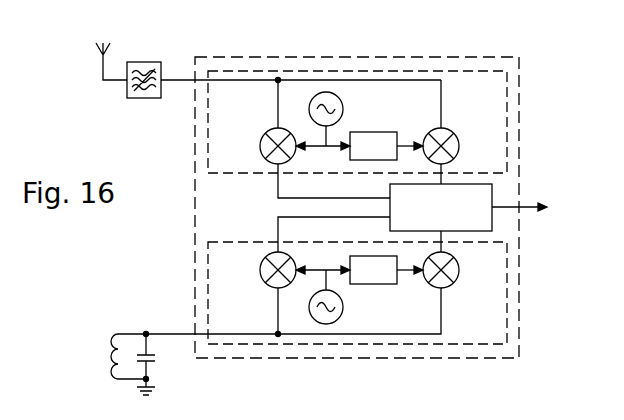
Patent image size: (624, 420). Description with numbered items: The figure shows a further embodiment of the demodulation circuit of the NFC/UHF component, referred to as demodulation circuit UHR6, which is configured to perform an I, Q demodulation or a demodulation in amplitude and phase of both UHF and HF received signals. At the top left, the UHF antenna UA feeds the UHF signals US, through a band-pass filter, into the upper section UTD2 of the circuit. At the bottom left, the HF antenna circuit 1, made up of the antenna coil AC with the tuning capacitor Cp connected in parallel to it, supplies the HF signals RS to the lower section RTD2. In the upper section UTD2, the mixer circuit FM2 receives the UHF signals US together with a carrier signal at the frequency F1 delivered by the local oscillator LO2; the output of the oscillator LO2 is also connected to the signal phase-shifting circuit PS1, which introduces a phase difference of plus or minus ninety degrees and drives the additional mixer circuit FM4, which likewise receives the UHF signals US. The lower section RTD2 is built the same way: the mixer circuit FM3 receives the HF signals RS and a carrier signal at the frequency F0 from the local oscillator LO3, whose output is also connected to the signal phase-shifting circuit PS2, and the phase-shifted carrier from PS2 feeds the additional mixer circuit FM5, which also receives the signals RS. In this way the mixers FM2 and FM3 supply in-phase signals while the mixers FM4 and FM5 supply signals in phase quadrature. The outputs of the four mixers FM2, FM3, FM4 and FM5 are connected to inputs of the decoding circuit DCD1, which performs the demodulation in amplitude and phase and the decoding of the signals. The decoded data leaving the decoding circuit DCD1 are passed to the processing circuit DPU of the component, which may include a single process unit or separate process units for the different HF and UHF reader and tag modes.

The HF antenna circuit 1 is at (128, 331).
The UHF antenna UA is at (108, 50).
The UHF signals US is at (301, 74).
The UHF demodulation section UTD2 is at (480, 70).
The HF demodulation section RTD2 is at (488, 345).
The demodulation circuit UHR6 is at (258, 218).
The mixer circuit FM2 is at (303, 139).
The mixer circuit FM3 is at (303, 277).
The additional mixer circuit FM4 is at (464, 132).
The additional mixer circuit FM5 is at (326, 282).
The local oscillator LO2 is at (342, 121).
The local oscillator LO3 is at (342, 295).
The signal phase-shifting circuit PS1 is at (391, 156).
The signal phase-shifting circuit PS2 is at (391, 280).
The decoding circuit DCD1 is at (468, 218).
The processing circuit DPU is at (543, 207).
The carrier frequency F1 is at (314, 137).
The HF carrier frequency F0 is at (312, 283).
The HF signals RS is at (166, 327).
The antenna coil AC is at (114, 356).
The tuning capacitor Cp is at (161, 356).